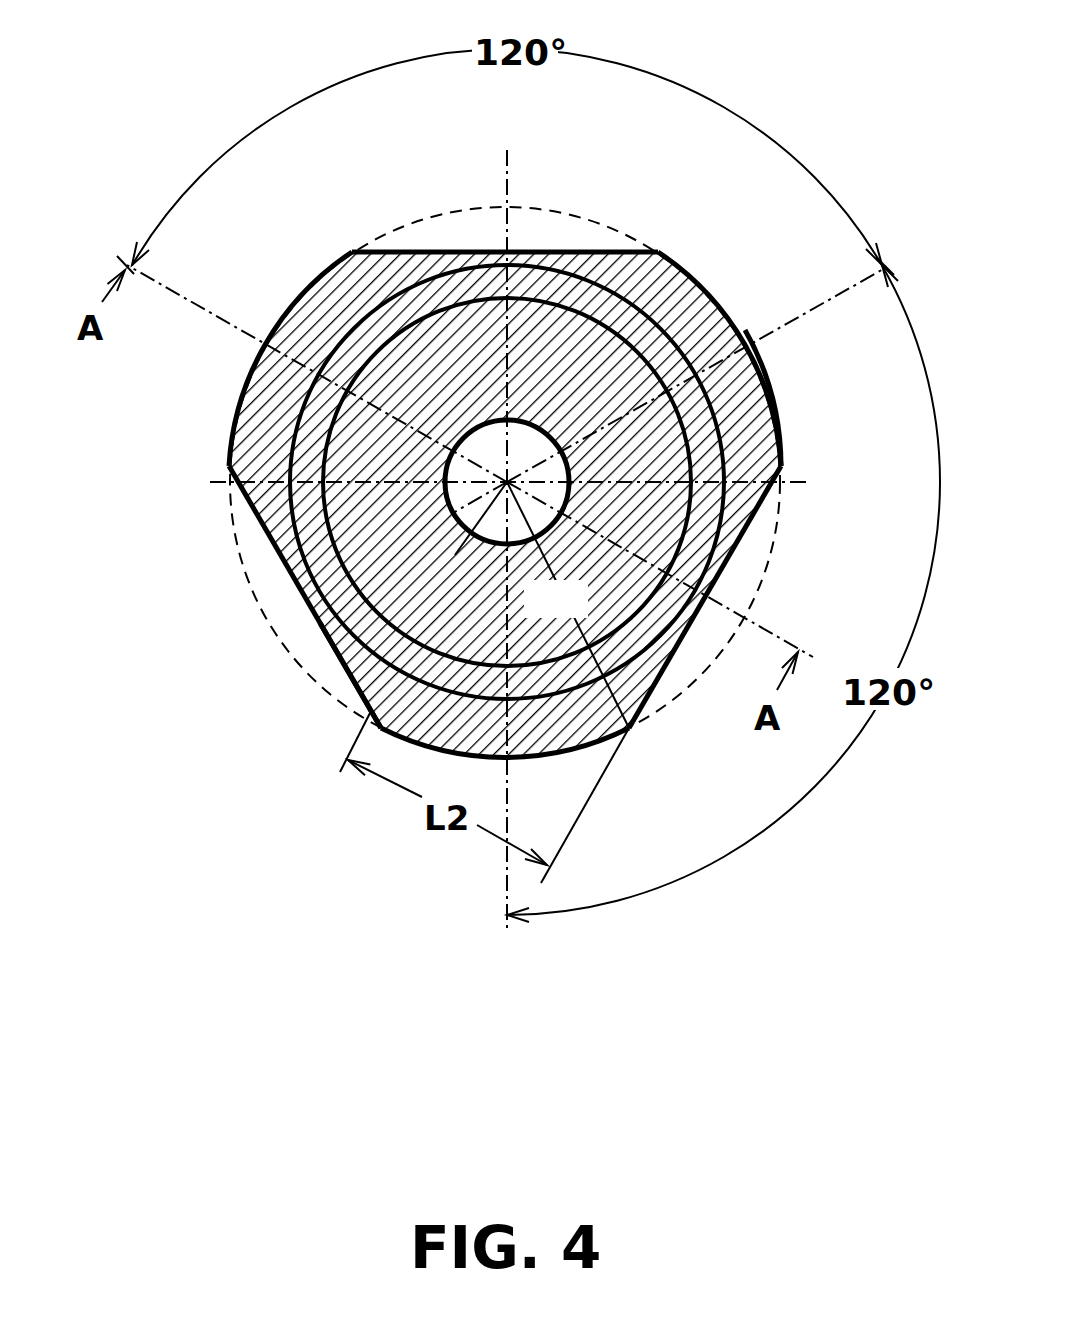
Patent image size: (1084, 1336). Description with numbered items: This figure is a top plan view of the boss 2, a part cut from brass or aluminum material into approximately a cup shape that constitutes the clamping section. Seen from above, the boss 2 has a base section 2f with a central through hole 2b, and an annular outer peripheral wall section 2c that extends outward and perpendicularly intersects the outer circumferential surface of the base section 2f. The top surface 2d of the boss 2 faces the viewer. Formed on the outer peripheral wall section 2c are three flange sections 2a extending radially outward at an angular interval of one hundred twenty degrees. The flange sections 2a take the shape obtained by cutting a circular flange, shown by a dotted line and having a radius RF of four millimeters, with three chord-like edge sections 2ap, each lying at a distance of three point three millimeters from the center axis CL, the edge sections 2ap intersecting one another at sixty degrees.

The boss 2 is at (507, 498).
The flange section 2a is at (710, 295).
The edge section 2ap is at (432, 252).
The through hole 2b is at (341, 655).
The outer peripheral wall section 2c is at (292, 308).
The top surface 2d is at (380, 345).
The base section 2f is at (770, 410).